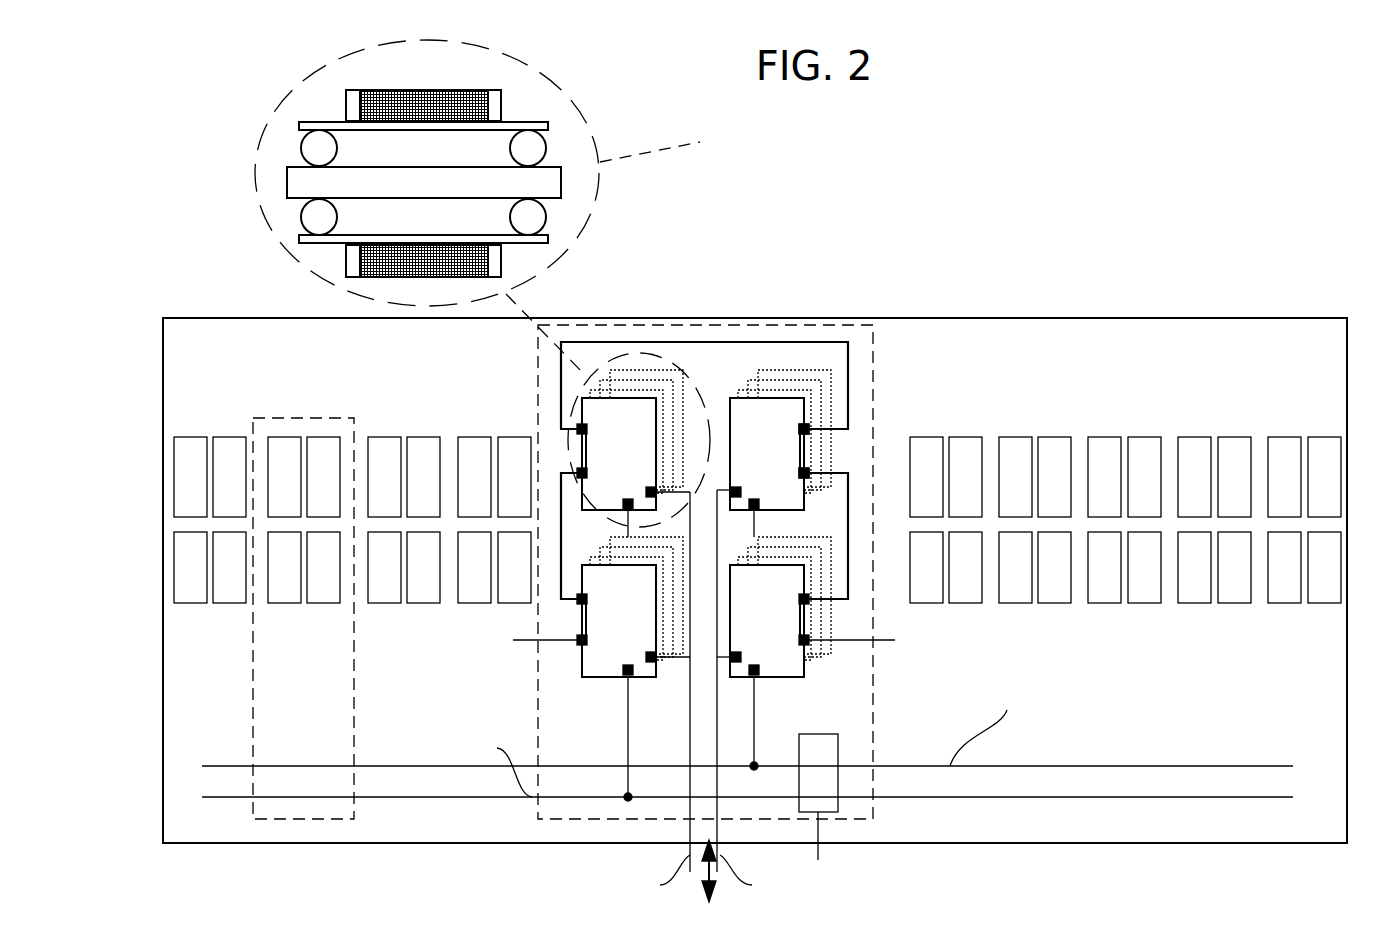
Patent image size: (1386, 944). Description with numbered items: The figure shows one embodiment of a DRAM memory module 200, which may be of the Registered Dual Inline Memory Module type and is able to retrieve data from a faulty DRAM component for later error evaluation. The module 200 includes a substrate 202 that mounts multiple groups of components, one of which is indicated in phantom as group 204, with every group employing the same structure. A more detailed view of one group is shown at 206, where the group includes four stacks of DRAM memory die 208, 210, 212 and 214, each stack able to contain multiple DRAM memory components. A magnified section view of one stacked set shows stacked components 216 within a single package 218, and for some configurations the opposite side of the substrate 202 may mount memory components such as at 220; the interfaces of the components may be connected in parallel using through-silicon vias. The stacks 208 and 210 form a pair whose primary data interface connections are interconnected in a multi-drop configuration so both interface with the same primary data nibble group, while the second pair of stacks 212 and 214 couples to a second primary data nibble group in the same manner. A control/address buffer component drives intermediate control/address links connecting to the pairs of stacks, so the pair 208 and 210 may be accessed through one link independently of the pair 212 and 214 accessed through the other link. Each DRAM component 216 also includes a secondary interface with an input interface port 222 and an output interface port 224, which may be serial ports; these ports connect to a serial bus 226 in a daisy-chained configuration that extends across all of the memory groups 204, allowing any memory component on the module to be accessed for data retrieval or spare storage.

The DRAM memory module 200 is at (755, 471).
The substrate 202 is at (1155, 396).
The group of components 204 is at (304, 418).
The detailed view of group of components 206 is at (885, 335).
The stack of DRAM memory die 208 is at (598, 621).
The stack of DRAM memory die 210 is at (598, 462).
The stack of DRAM memory die 212 is at (751, 462).
The stack of DRAM memory die 214 is at (751, 621).
The stacked components 216 is at (357, 97).
The package 218 is at (501, 113).
The memory components 220 is at (346, 258).
The input interface port 222 is at (799, 429).
The output interface port 224 is at (801, 477).
The serial bus 226 is at (848, 405).